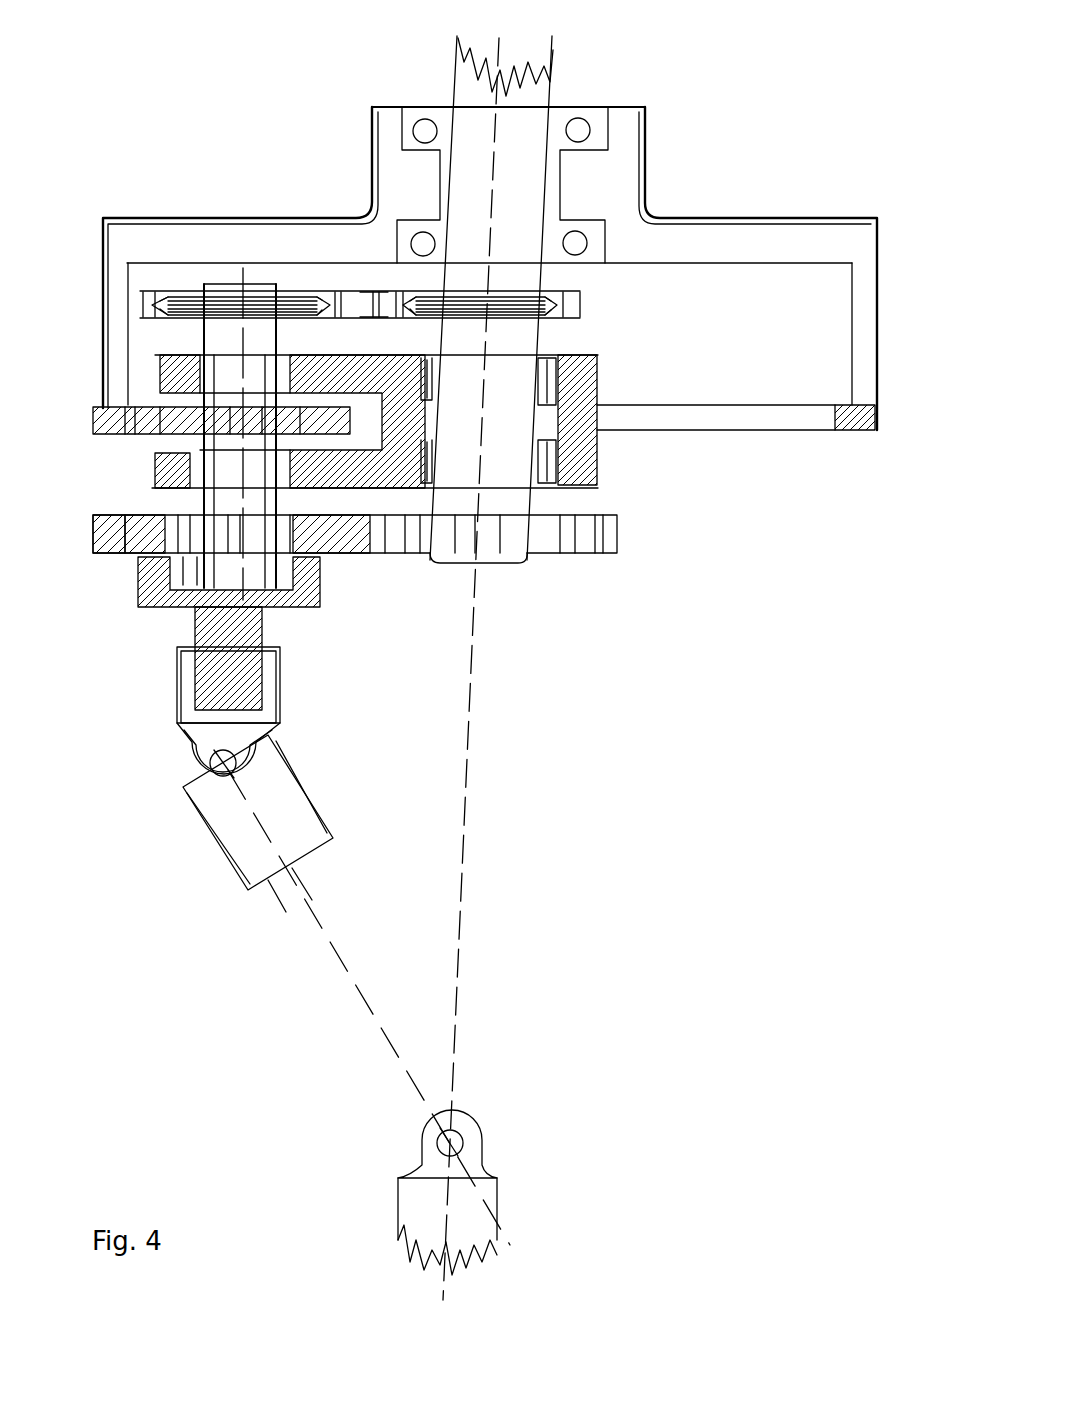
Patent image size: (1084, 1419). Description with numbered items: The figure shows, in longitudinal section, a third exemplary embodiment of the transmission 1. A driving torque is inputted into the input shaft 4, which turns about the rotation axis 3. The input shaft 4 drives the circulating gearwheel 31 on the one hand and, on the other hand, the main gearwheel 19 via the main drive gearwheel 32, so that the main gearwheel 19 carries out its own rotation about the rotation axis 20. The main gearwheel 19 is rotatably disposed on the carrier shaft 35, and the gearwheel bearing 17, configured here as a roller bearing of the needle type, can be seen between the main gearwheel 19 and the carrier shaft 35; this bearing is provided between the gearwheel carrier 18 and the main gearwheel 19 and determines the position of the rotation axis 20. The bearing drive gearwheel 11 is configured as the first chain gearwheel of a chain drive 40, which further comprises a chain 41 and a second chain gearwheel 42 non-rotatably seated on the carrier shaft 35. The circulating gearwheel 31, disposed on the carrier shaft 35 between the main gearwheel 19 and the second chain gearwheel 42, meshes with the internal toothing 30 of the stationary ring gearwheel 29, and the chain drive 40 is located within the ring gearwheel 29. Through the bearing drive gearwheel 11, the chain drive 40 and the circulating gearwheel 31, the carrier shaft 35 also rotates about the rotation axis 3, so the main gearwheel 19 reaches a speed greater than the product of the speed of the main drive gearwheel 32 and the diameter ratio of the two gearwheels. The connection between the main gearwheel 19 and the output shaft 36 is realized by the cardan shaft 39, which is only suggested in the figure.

The transmission 1 is at (663, 665).
The rotation axis 3 is at (467, 743).
The input shaft 4 is at (551, 92).
The bearing drive gearwheel 11 is at (560, 317).
The gearwheel bearing 17 is at (139, 573).
The gearwheel carrier 18 is at (593, 463).
The main gearwheel 19 is at (320, 599).
The rotation axis 20 is at (220, 863).
The stationary ring gearwheel 29 is at (873, 381).
The internal toothing 30 is at (830, 431).
The circulating gearwheel 31 is at (143, 437).
The main drive gearwheel 32 is at (575, 553).
The carrier shaft 35 is at (207, 573).
The output shaft 36 is at (470, 1273).
The cardan shaft 39 is at (333, 867).
The chain drive 40 is at (338, 296).
The chain 41 is at (368, 296).
The second chain gearwheel 42 is at (183, 296).